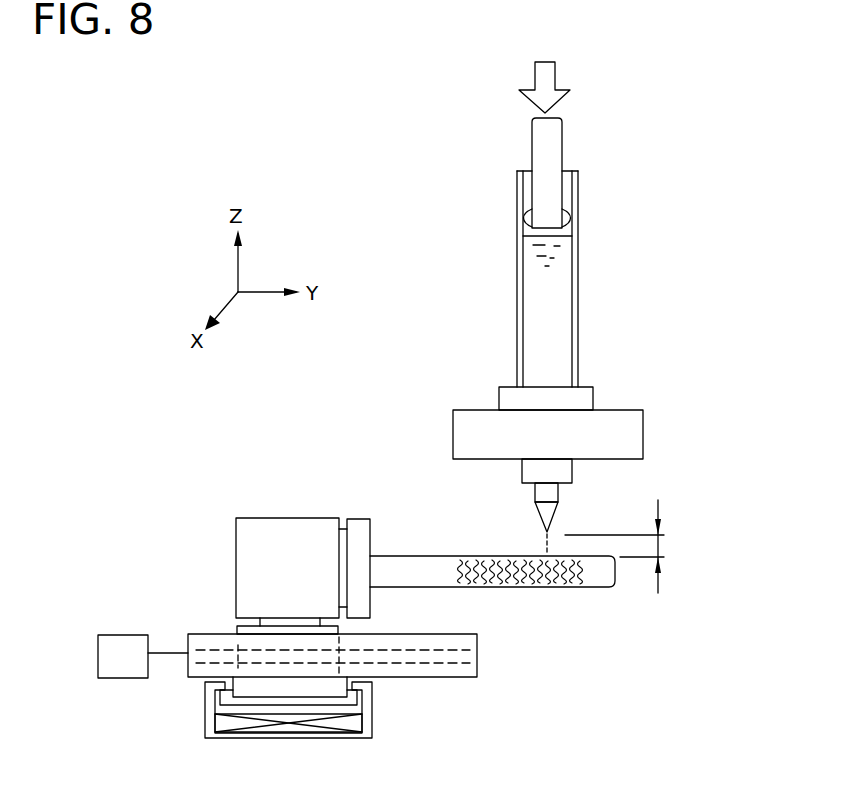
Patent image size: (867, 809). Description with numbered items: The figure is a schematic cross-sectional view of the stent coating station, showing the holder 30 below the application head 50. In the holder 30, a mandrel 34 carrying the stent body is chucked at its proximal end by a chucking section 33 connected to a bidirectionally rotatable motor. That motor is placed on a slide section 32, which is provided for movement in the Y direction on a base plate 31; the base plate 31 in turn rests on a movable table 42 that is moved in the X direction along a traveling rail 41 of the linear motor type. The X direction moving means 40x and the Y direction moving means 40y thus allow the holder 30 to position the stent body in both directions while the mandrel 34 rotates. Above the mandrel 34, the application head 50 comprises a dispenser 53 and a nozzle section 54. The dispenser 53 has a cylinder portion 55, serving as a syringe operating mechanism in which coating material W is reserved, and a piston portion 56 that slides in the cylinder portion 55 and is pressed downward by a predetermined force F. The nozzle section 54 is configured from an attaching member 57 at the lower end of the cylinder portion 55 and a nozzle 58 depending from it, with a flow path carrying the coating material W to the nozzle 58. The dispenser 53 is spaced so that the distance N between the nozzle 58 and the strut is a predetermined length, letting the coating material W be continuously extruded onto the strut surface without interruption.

The holder 30 is at (228, 510).
The base plate 31 is at (433, 672).
The slide section 32 is at (345, 629).
The chucking section 33 is at (358, 518).
The mandrel 34 is at (428, 553).
The X direction moving means 40x is at (190, 708).
The Y direction moving means 40y is at (178, 622).
The traveling rail 41 is at (330, 724).
The movable table 42 is at (297, 697).
The application head 50 is at (665, 178).
The dispenser 53 is at (491, 188).
The nozzle section 54 is at (447, 380).
The cylinder portion 55 is at (578, 276).
The piston portion 56 is at (548, 151).
The attaching member 57 is at (627, 441).
The nozzle 58 is at (550, 498).
The coating material W is at (550, 328).
The predetermined force F is at (548, 83).
The distance between nozzle and strut N is at (631, 546).